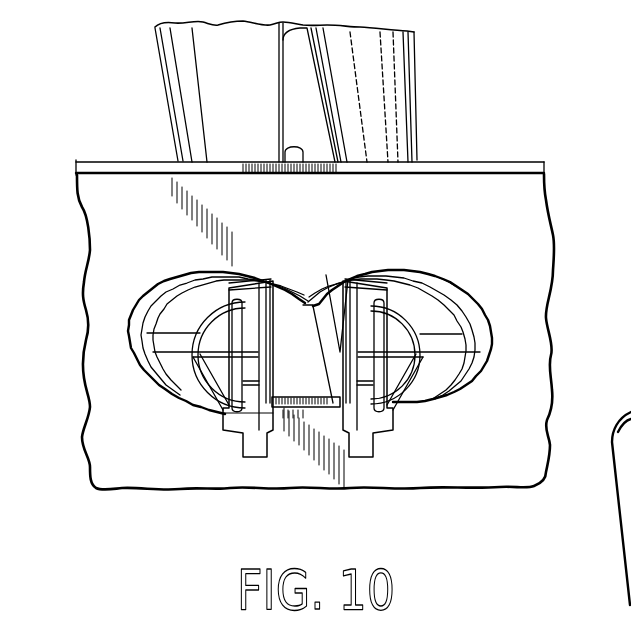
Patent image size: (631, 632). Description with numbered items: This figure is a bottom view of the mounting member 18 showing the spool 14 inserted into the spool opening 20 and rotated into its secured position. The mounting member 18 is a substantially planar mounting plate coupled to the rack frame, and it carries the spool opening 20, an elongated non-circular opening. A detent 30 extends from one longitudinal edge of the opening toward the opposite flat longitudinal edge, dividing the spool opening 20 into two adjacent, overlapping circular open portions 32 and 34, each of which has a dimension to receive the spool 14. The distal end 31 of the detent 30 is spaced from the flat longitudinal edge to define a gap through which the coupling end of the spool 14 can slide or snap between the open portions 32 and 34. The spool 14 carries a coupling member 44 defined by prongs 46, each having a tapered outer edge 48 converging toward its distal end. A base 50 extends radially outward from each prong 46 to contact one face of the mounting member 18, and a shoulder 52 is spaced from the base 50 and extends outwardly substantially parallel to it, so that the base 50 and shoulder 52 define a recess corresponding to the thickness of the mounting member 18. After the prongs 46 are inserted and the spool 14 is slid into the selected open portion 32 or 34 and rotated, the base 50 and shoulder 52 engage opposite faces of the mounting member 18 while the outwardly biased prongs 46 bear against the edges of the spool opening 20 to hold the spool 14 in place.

The spool 14 is at (415, 67).
The mounting member 18 is at (508, 161).
The spool opening 20 is at (423, 287).
The detent 30 is at (305, 303).
The distal end 31 is at (307, 309).
The open portion 32 is at (185, 308).
The open portion 34 is at (440, 314).
The coupling member 44 is at (216, 421).
The prongs 46 is at (247, 460).
The tapered outer edge 48 is at (212, 412).
The base 50 is at (176, 323).
The shoulder 52 is at (195, 351).